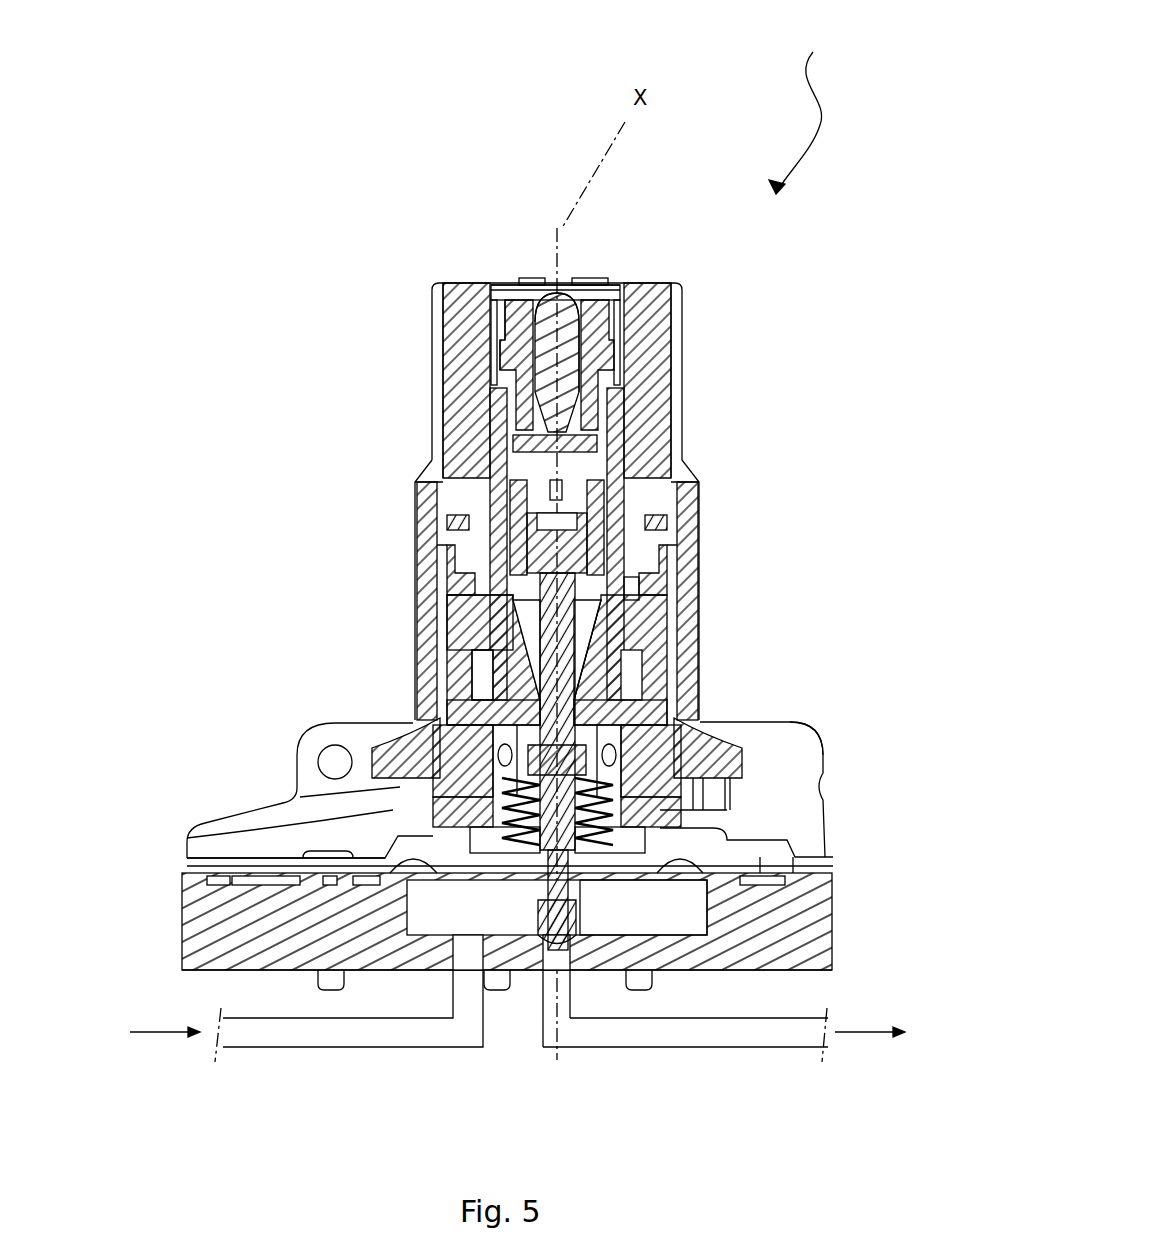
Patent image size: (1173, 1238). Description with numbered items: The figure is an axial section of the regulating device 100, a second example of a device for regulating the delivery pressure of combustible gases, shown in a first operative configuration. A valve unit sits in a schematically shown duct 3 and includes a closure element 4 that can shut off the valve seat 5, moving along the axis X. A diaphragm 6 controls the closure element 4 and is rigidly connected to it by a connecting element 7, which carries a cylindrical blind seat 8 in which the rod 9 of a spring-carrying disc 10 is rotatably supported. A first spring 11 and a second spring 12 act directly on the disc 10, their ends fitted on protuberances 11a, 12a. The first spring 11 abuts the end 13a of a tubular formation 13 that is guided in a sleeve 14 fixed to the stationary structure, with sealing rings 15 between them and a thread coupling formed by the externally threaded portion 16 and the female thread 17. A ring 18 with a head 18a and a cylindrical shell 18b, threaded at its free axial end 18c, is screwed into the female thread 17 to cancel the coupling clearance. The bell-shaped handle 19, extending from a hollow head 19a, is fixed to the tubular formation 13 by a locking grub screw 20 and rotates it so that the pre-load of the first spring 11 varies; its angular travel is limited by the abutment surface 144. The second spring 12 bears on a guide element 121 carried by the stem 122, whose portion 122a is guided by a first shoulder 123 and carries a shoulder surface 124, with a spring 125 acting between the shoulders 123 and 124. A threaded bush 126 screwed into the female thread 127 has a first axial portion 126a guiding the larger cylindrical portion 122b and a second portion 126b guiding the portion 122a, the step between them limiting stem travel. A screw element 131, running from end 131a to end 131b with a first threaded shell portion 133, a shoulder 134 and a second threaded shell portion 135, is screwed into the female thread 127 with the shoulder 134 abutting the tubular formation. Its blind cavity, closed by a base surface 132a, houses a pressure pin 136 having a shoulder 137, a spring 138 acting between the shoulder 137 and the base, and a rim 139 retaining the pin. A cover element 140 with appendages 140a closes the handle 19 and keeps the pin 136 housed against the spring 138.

The regulating device 100 is at (822, 106).
The duct 3 is at (310, 1040).
The closure element 4 is at (527, 960).
The valve seat 5 is at (466, 960).
The diaphragm 6 is at (712, 922).
The connecting element 7 is at (612, 945).
The cylindrical blind seat 8 is at (380, 962).
The rod 9 is at (447, 937).
The spring-carrying disc 10 is at (645, 885).
The first spring 11 is at (283, 918).
The protuberance 11a is at (770, 842).
The second spring 12 is at (727, 810).
The protuberance 12a is at (265, 970).
The tubular formation 13 is at (297, 790).
The end of tubular formation 13a is at (200, 856).
The sleeve 14 is at (433, 730).
The sealing rings 15 is at (743, 767).
The externally threaded portion 16 is at (447, 632).
The female thread 17 is at (369, 617).
The ring 18 is at (417, 503).
The head 18a is at (447, 498).
The cylindrical shell 18b is at (447, 557).
The free axial end 18c is at (447, 613).
The handle 19 is at (705, 472).
The head 19a is at (466, 283).
The locking grub screw 20 is at (457, 403).
The guide 121 is at (698, 712).
The stem 122 is at (470, 716).
The stem portion 122a is at (667, 677).
The cylindrical portion 122b is at (660, 500).
The first shoulder 123 is at (540, 692).
The shoulder surface 124 is at (660, 580).
The spring 125 is at (667, 637).
The bush 126 is at (660, 495).
The first axial portion 126a is at (630, 478).
The second portion 126b is at (660, 540).
The female thread 127 is at (492, 465).
The screw element 131 is at (648, 290).
The axial end of screw element 131a is at (655, 283).
The opposite end of screw element 131b is at (616, 425).
The base surface 132a is at (493, 402).
The first externally threaded shell portion 133 is at (600, 372).
The shoulder 134 is at (600, 382).
The second externally threaded shell portion 135 is at (600, 410).
The pressure pin 136 is at (592, 285).
The shoulder 137 is at (493, 378).
The spring 138 is at (600, 432).
The rim 139 is at (541, 283).
The cover element 140 is at (505, 283).
The appendages 140a is at (493, 352).
The abutment surface 144 is at (800, 742).